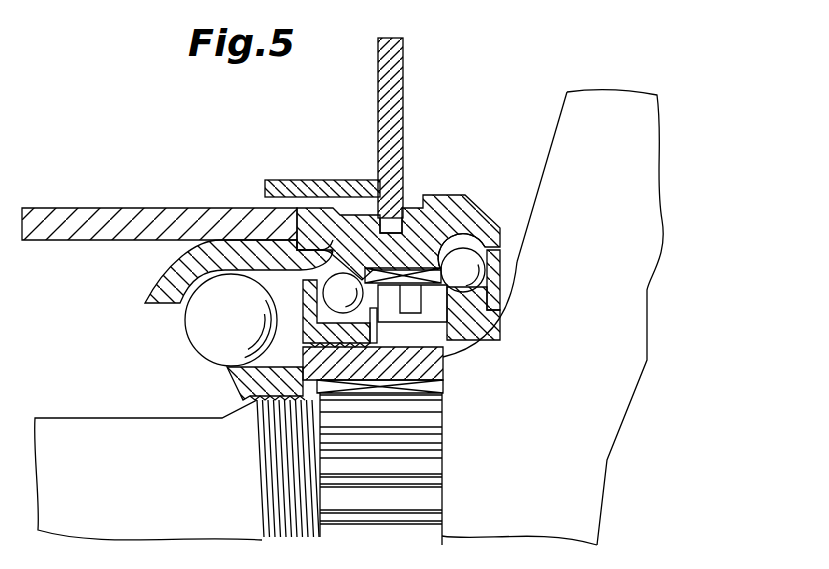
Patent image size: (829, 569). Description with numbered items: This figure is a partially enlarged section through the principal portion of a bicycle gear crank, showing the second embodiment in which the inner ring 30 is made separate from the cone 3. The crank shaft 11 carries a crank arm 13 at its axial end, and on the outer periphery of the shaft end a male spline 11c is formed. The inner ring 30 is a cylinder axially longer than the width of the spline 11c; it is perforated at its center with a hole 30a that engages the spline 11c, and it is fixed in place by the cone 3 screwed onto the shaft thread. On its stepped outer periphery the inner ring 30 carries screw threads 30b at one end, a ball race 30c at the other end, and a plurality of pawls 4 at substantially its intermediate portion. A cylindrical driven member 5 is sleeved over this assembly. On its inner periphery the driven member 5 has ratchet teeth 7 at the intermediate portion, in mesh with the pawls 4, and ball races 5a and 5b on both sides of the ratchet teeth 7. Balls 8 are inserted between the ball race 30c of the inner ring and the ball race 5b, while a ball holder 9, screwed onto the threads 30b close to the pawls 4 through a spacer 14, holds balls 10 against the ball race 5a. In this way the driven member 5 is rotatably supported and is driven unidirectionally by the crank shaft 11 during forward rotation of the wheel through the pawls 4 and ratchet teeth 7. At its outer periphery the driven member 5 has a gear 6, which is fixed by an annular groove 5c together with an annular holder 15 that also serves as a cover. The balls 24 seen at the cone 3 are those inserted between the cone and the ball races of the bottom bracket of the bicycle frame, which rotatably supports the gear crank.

The cone 3 is at (235, 382).
The pawls 4 is at (433, 322).
The driven member 5 is at (452, 197).
The ball race 5a is at (318, 213).
The ball race 5b is at (468, 245).
The annular groove 5c is at (405, 200).
The gear 6 is at (403, 104).
The ratchet teeth 7 is at (425, 272).
The balls 8 is at (474, 255).
The ball holder 9 is at (255, 310).
The balls 10 is at (287, 200).
The crank shaft 11 is at (120, 430).
The male spline 11c is at (437, 480).
The crank arm 13 is at (632, 263).
The spacer 14 is at (443, 335).
The annular holder 15 is at (337, 180).
The balls 24 is at (205, 292).
The inner ring 30 is at (447, 366).
The hole 30a is at (440, 383).
The screw threads 30b is at (325, 305).
The ball race 30c is at (487, 277).